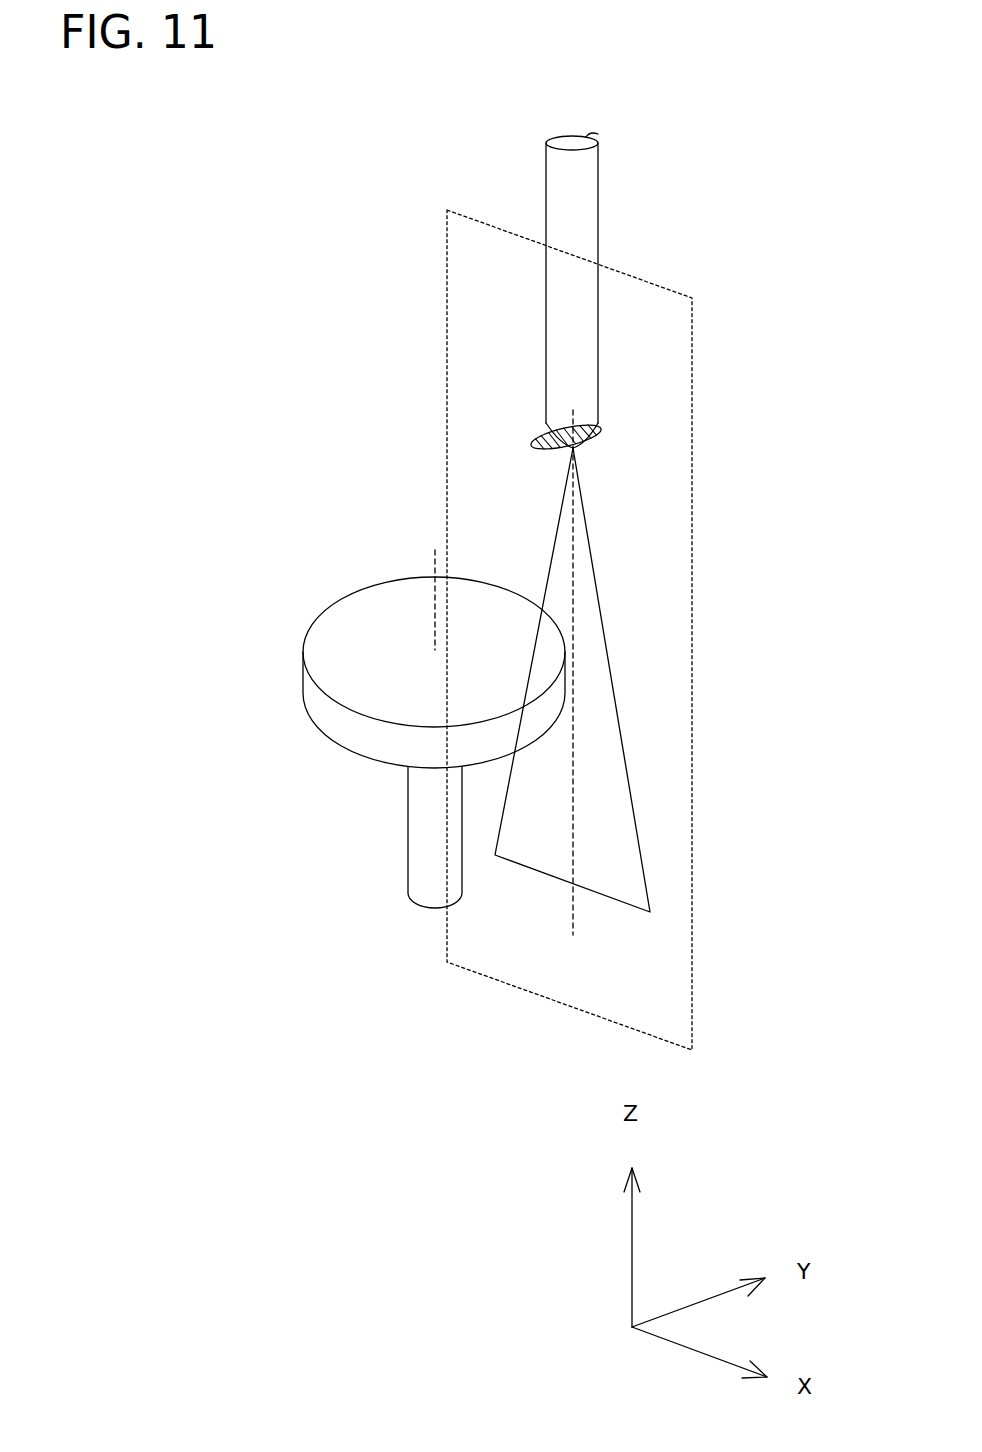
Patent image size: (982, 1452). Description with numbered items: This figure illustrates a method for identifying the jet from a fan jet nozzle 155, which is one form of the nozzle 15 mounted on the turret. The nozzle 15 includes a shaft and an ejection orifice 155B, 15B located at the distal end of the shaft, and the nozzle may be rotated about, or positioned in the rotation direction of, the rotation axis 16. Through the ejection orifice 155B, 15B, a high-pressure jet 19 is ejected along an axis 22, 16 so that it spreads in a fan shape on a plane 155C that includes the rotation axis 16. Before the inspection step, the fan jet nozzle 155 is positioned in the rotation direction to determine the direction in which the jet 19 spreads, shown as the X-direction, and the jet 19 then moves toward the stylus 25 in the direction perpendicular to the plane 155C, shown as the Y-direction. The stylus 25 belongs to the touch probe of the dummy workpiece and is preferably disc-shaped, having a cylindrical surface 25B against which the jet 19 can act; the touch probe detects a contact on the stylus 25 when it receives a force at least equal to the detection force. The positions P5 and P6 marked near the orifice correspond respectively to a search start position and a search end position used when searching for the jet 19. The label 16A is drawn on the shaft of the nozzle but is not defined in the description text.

The fan jet nozzle 155 is at (601, 534).
The nozzle 15 is at (598, 240).
The stylus shaft 16A is at (598, 328).
The ejection orifice 155B is at (635, 450).
The ejection orifice 15B is at (587, 442).
The search start position P5 is at (597, 421).
The search end position P6 is at (533, 445).
The jet 19 is at (607, 648).
The cylindrical surface 25B is at (349, 659).
The stylus 25 is at (305, 683).
The plane 155C is at (692, 692).
The axis 22 is at (544, 872).
The rotation axis 16 is at (575, 907).